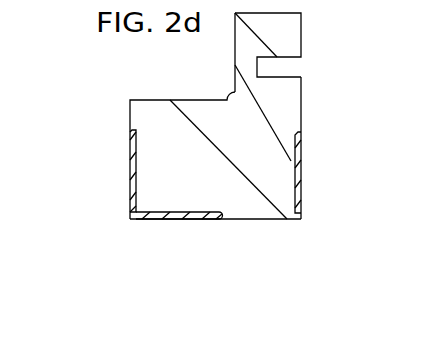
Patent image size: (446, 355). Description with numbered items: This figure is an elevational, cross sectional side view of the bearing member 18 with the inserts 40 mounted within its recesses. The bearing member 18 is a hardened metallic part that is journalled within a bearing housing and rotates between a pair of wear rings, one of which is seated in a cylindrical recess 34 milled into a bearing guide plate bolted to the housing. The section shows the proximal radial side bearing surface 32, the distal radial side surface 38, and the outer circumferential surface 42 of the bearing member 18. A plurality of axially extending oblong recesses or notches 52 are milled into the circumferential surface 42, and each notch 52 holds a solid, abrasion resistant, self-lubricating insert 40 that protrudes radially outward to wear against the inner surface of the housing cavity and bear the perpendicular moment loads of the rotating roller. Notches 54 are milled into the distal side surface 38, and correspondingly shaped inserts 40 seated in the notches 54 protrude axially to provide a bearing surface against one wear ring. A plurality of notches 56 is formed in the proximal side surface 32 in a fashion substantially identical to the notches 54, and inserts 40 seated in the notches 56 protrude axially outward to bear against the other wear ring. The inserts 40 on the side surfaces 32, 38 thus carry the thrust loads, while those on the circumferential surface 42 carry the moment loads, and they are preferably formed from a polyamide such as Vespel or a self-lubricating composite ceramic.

The bearing member 18 is at (296, 34).
The proximal radial side bearing surface 32 is at (128, 118).
The cylindrical recess 34 is at (293, 28).
The distal radial side surface 38 is at (303, 92).
The insert 40 is at (127, 159).
The circumferential surface 42 is at (272, 222).
The recesses or notches 52 is at (179, 211).
The notches 54 is at (292, 162).
The notches 56 is at (140, 193).